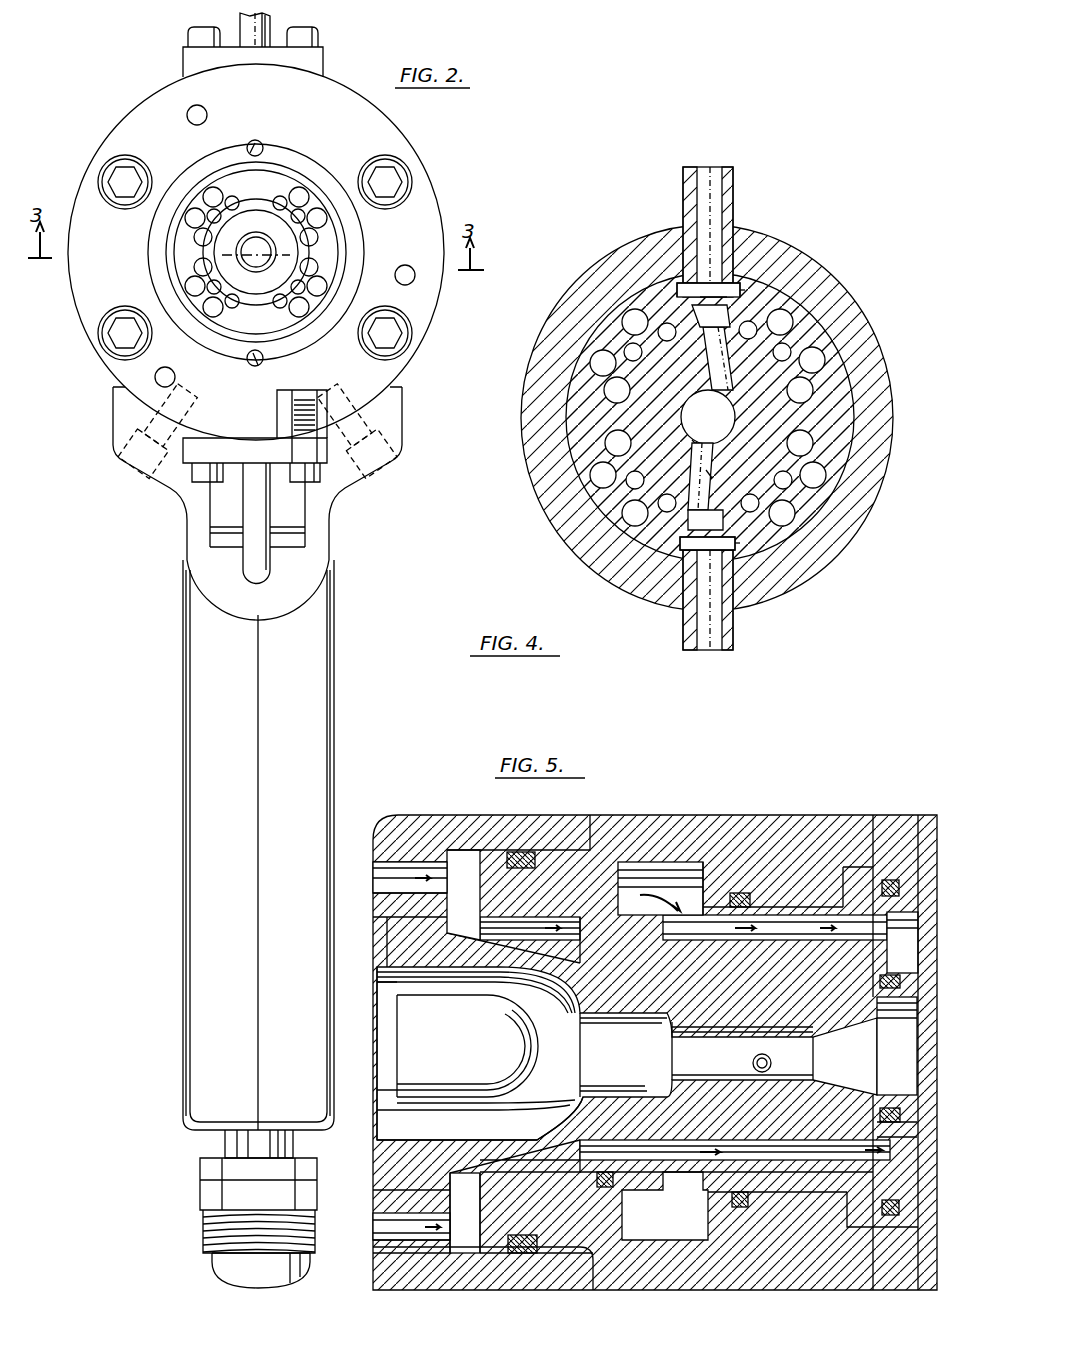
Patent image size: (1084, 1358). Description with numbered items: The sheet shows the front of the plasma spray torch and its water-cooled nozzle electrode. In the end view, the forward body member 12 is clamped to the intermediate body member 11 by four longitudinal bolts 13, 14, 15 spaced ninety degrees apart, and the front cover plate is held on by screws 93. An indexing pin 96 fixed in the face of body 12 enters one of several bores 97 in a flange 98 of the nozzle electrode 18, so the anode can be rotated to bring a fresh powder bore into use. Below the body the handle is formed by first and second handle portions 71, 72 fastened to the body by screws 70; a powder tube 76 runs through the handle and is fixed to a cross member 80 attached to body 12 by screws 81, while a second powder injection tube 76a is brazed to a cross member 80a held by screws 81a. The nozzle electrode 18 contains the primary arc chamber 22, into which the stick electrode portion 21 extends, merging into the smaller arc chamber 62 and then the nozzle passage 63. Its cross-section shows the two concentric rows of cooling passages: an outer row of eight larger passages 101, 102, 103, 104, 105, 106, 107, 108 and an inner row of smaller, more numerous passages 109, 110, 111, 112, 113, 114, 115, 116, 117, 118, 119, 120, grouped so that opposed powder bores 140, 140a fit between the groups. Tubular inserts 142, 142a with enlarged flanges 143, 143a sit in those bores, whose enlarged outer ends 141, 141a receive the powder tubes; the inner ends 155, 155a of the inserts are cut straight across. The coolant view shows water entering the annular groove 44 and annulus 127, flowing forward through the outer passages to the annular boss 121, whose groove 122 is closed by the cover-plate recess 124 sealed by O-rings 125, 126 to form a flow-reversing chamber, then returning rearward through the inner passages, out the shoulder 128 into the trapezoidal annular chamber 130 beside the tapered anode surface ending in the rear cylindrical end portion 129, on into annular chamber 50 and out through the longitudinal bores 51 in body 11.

In FIG. 5, the intermediate body member 11 is at (500, 815).
In FIG. 4, the forward body member 12 is at (522, 405).
In FIG. 5, the forward body member 12 is at (735, 1290).
In FIG. 2, the bolt 13 is at (105, 170).
In FIG. 2, the bolt 14 is at (405, 170).
In FIG. 2, the bolt 15 is at (105, 340).
In FIG. 2, the nozzle electrode 18 is at (308, 149).
In FIG. 4, the nozzle electrode 18 is at (856, 418).
In FIG. 5, the nozzle electrode 18 is at (810, 900).
In FIG. 5, the stick electrode portion 21 is at (455, 1062).
In FIG. 5, the primary arc chamber 22 is at (530, 1122).
In FIG. 5, the annular groove 44 is at (680, 1250).
In FIG. 5, the annular chamber 50 is at (450, 1290).
In FIG. 2, the longitudinal bores 51 is at (372, 1270).
In FIG. 5, the longitudinal bores 51 is at (372, 1273).
In FIG. 5, the arc chamber 62 is at (635, 1062).
In FIG. 2, the nozzle passage 63 is at (236, 248).
In FIG. 4, the nozzle passage 63 is at (690, 402).
In FIG. 5, the nozzle passage 63 is at (708, 1064).
In FIG. 2, the screws 70 is at (110, 436).
In FIG. 2, the first handle portion 71 is at (190, 745).
In FIG. 2, the second handle portion 72 is at (332, 706).
In FIG. 2, the powder tube 76 is at (270, 560).
In FIG. 4, the powder tube 76 is at (735, 632).
In FIG. 2, the second powder injection tube 76a is at (268, 27).
In FIG. 4, the second powder injection tube 76a is at (733, 182).
In FIG. 2, the cross member 80 is at (190, 462).
In FIG. 2, the cross member 80a is at (322, 52).
In FIG. 2, the screws 81 is at (198, 482).
In FIG. 2, the screws 81a is at (188, 37).
In FIG. 2, the screws 93 is at (205, 108).
In FIG. 2, the indexing pin 96 is at (262, 145).
In FIG. 2, the bores 97 is at (248, 147).
In FIG. 2, the flange 98 is at (150, 270).
In FIG. 5, the flange 98 is at (852, 1225).
In FIG. 4, the outer-row cooling passage 101 is at (632, 322).
In FIG. 4, the outer-row cooling passage 102 is at (630, 352).
In FIG. 5, the outer-row cooling passage 102 is at (805, 940).
In FIG. 4, the outer-row cooling passage 103 is at (602, 475).
In FIG. 4, the outer-row cooling passage 104 is at (633, 514).
In FIG. 4, the outer-row cooling passage 105 is at (784, 512).
In FIG. 4, the outer-row cooling passage 106 is at (815, 475).
In FIG. 4, the outer-row cooling passage 107 is at (814, 360).
In FIG. 4, the outer-row cooling passage 108 is at (782, 322).
In FIG. 4, the inner-row cooling passage 109 is at (660, 328).
In FIG. 4, the inner-row cooling passage 110 is at (665, 331).
In FIG. 4, the inner-row cooling passage 111 is at (602, 363).
In FIG. 4, the inner-row cooling passage 112 is at (615, 443).
In FIG. 4, the inner-row cooling passage 113 is at (632, 482).
In FIG. 4, the inner-row cooling passage 114 is at (665, 505).
In FIG. 4, the inner-row cooling passage 115 is at (752, 505).
In FIG. 4, the inner-row cooling passage 116 is at (785, 480).
In FIG. 4, the inner-row cooling passage 117 is at (802, 443).
In FIG. 5, the inner-row cooling passage 117 is at (790, 1140).
In FIG. 4, the inner-row cooling passage 118 is at (802, 390).
In FIG. 4, the inner-row cooling passage 119 is at (784, 352).
In FIG. 4, the inner-row cooling passage 120 is at (750, 328).
In FIG. 2, the annular boss 121 is at (335, 224).
In FIG. 5, the annular boss 121 is at (915, 895).
In FIG. 2, the annular groove 122 is at (325, 246).
In FIG. 5, the annular groove 122 is at (880, 1150).
In FIG. 5, the annular recess 124 is at (905, 960).
In FIG. 5, the O-ring 125 is at (885, 860).
In FIG. 5, the O-ring 126 is at (880, 988).
In FIG. 5, the annulus 127 is at (702, 1192).
In FIG. 5, the shoulder 128 is at (580, 940).
In FIG. 5, the rear cylindrical end portion 129 is at (415, 990).
In FIG. 5, the annular chamber 130 is at (560, 1130).
In FIG. 4, the powder bore 140 is at (710, 475).
In FIG. 5, the powder bore 140 is at (765, 1075).
In FIG. 4, the powder bore 140a is at (725, 380).
In FIG. 4, the enlarged outer end 141 is at (735, 540).
In FIG. 4, the enlarged outer end 141a is at (745, 290).
In FIG. 4, the tubular insert 142 is at (722, 450).
In FIG. 4, the tubular insert 142a is at (700, 360).
In FIG. 4, the enlarged flange 143 is at (688, 537).
In FIG. 4, the enlarged flange 143a is at (672, 283).
In FIG. 4, the inner end 155 is at (690, 446).
In FIG. 4, the inner end 155a is at (730, 405).